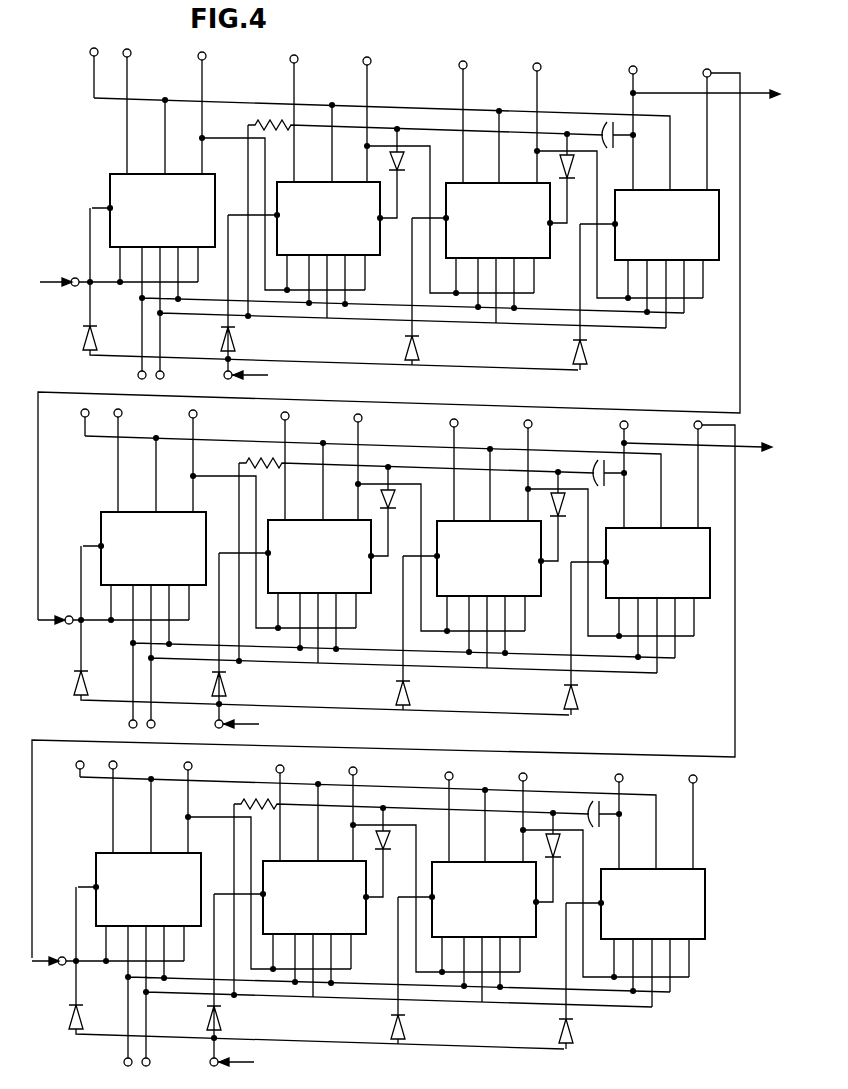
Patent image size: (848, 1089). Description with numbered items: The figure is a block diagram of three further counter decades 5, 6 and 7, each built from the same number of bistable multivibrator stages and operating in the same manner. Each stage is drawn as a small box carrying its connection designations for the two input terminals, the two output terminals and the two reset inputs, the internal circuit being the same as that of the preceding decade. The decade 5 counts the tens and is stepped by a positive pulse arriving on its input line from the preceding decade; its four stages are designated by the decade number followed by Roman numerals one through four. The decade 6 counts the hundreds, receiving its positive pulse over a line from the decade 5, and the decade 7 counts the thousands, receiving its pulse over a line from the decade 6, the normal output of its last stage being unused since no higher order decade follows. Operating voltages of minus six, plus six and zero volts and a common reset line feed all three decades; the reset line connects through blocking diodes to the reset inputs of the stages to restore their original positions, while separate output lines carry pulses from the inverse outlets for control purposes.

The decade 5 is at (412, 210).
The decade 6 is at (410, 574).
The decade 7 is at (367, 919).